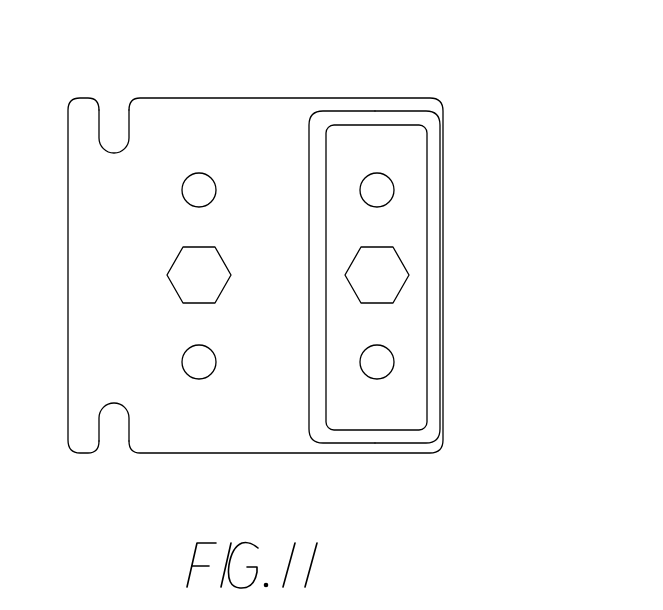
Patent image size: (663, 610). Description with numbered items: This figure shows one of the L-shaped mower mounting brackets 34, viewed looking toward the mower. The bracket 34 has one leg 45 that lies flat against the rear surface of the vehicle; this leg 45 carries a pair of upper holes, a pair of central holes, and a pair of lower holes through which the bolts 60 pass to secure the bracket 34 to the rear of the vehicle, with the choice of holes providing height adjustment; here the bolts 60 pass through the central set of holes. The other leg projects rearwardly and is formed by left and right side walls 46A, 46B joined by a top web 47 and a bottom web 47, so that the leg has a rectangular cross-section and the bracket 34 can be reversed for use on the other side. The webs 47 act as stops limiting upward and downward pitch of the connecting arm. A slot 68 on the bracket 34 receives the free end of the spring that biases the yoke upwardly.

The mounting bracket 34 is at (230, 114).
The leg 45 is at (280, 419).
The left side wall 46A is at (314, 190).
The right side wall 46B is at (440, 192).
The web 47 is at (411, 120).
The bolt 60 is at (212, 264).
The slot 68 is at (128, 133).